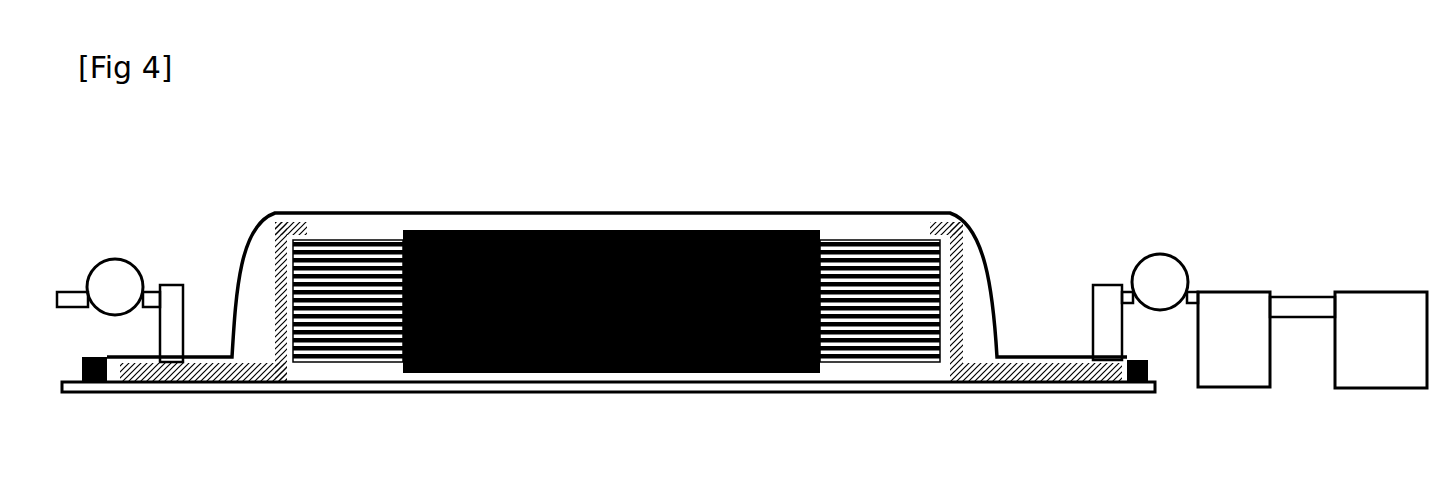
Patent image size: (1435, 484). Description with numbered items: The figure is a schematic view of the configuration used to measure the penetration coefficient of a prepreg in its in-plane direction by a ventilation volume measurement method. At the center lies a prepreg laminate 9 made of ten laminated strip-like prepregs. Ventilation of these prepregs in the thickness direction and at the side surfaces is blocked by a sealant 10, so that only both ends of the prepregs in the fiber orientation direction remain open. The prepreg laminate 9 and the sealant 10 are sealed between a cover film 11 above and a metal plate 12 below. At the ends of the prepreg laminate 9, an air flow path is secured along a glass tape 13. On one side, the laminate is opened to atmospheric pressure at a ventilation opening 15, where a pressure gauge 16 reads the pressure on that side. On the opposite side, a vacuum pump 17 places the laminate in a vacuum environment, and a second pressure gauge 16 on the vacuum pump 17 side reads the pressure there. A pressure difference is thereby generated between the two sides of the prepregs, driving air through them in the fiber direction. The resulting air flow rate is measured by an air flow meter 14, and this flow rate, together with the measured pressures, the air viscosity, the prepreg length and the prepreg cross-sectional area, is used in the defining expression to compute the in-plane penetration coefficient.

The prepreg laminate 9 is at (360, 262).
The sealant 10 is at (433, 235).
The cover film 11 is at (537, 213).
The metal plate 12 is at (907, 377).
The glass tape 13 is at (942, 228).
The air flow meter 14 is at (1230, 303).
The ventilation opening 15 is at (70, 290).
The pressure gauge 16 is at (128, 265).
The vacuum pump 17 is at (1347, 308).